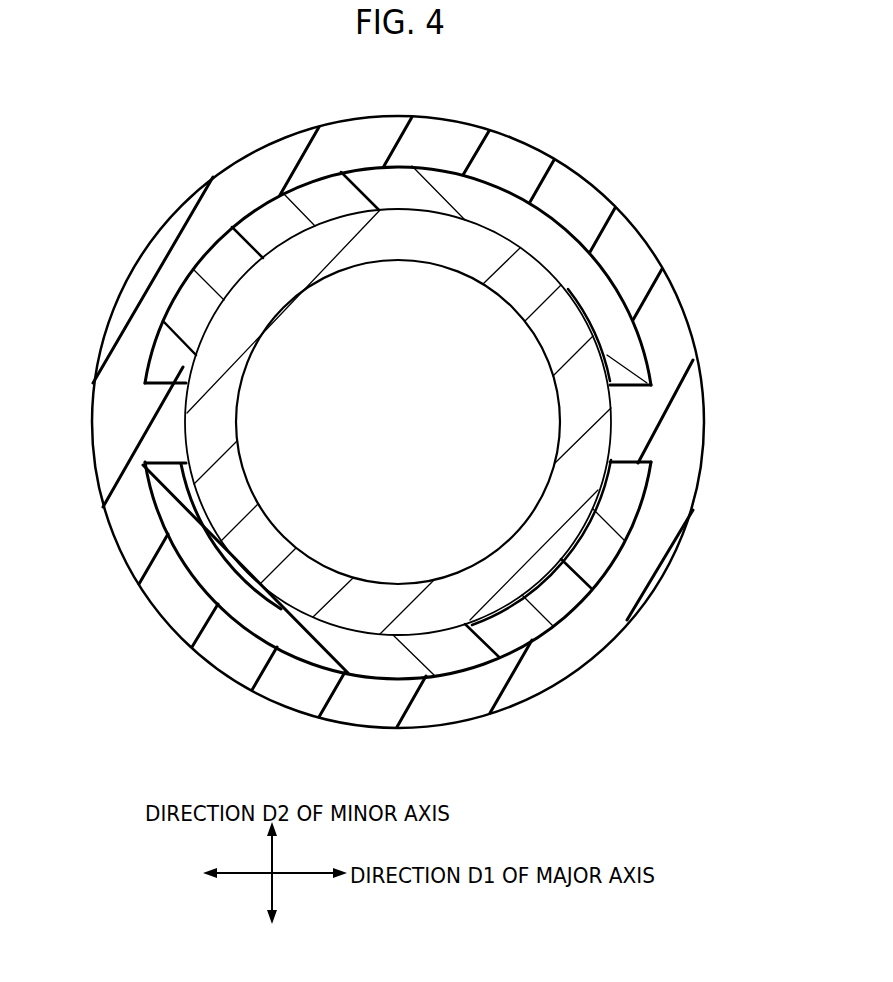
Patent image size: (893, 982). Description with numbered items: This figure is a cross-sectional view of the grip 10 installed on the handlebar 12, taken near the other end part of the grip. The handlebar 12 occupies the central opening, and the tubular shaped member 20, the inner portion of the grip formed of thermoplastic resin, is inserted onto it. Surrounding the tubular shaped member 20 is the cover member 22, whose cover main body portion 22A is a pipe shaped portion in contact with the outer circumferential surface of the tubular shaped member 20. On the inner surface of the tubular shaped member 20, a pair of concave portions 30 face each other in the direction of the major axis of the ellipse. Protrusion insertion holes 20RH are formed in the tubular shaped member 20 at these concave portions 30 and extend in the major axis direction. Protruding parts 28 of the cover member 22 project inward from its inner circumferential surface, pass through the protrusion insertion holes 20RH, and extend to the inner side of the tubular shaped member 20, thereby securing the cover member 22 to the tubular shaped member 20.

The grip 10 is at (564, 116).
The handlebar 12 is at (480, 575).
The tubular shaped member 20 is at (508, 224).
The cover member 22 is at (393, 422).
The cover main body portion 22A is at (237, 190).
The protruding parts 28 is at (155, 403).
The protrusion insertion holes 20RH is at (153, 460).
The concave portions 30 is at (194, 387).